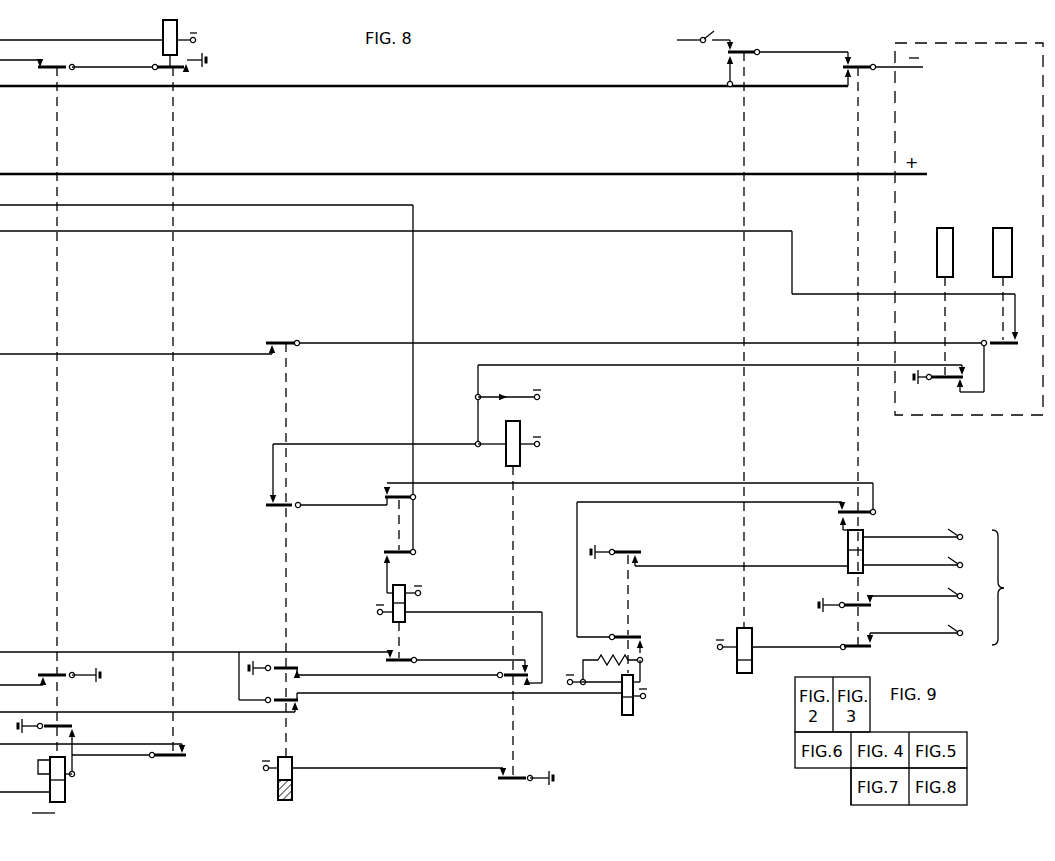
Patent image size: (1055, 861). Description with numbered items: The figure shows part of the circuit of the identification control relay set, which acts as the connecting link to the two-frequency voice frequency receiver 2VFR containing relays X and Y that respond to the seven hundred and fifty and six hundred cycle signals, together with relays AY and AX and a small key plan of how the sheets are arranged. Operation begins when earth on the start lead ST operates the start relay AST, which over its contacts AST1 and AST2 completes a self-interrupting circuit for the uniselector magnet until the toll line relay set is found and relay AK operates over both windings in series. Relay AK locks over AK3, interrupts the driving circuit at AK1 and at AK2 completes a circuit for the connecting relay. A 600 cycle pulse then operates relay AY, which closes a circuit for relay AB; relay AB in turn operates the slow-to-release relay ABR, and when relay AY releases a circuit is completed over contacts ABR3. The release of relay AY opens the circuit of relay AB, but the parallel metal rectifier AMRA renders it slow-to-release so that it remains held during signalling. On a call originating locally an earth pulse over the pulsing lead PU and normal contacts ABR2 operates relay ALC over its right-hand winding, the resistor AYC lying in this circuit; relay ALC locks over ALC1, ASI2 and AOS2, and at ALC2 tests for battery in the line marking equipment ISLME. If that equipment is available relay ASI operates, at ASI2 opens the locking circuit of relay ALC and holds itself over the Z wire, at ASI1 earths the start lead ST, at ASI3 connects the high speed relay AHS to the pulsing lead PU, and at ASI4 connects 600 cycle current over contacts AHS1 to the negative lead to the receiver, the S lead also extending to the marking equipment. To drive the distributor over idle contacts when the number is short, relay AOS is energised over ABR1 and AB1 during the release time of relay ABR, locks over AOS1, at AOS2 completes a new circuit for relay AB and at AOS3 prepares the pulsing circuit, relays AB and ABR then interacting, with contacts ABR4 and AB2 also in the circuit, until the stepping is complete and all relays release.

The start relay AST is at (163, 30).
The contact of relay AK AK1 is at (60, 66).
The contact of relay AST AST1 is at (182, 70).
The 600 cycles-per-second signal 600 is at (661, 50).
The contact of high speed relay AHS AHS1 is at (746, 48).
The contact of relay ASI ASI4 is at (862, 60).
The voice frequency receiver 2VFR is at (985, 132).
The relay AY is at (942, 228).
The relay AX is at (1002, 228).
The relay X contact X is at (1005, 348).
The relay Y contact Y is at (952, 382).
The contact of relay ABR ABR3 is at (288, 341).
The metal rectifier AMRA is at (505, 392).
The relay AB is at (520, 432).
The contact of relay ABR ABR4 is at (288, 503).
The contact of relay AOS AOS2 is at (396, 503).
The contact of relay AOS AOS1 is at (390, 552).
The relay AOS is at (406, 610).
The contact of relay AOS AOS3 is at (410, 658).
The contact of relay ABR ABR1 is at (292, 670).
The contact of relay AB AB1 is at (500, 680).
The contact of relay ABR ABR2 is at (296, 704).
The contact of relay ALC ALC2 is at (624, 550).
The contact of relay ALC ALC1 is at (632, 635).
The resistor AYC is at (596, 659).
The relay ALC is at (621, 707).
The high speed relay AHS is at (737, 652).
The contact of relay ASI ASI2 is at (848, 508).
The relay ASI is at (848, 542).
The contact of relay ASI ASI1 is at (852, 600).
The contact of relay ASI ASI3 is at (850, 643).
The Z wire Z is at (981, 528).
The S lead S is at (981, 556).
The start lead ST is at (989, 587).
The pulsing lead PU is at (989, 624).
The line marking equipment ISLME is at (1010, 587).
The contact of relay AK AK2 is at (62, 680).
The contact of relay AK AK3 is at (74, 727).
The contact of relay AST AST2 is at (182, 760).
The relay AK is at (66, 786).
The slow-to-release relay ABR is at (292, 778).
The contact of relay AB AB2 is at (508, 781).